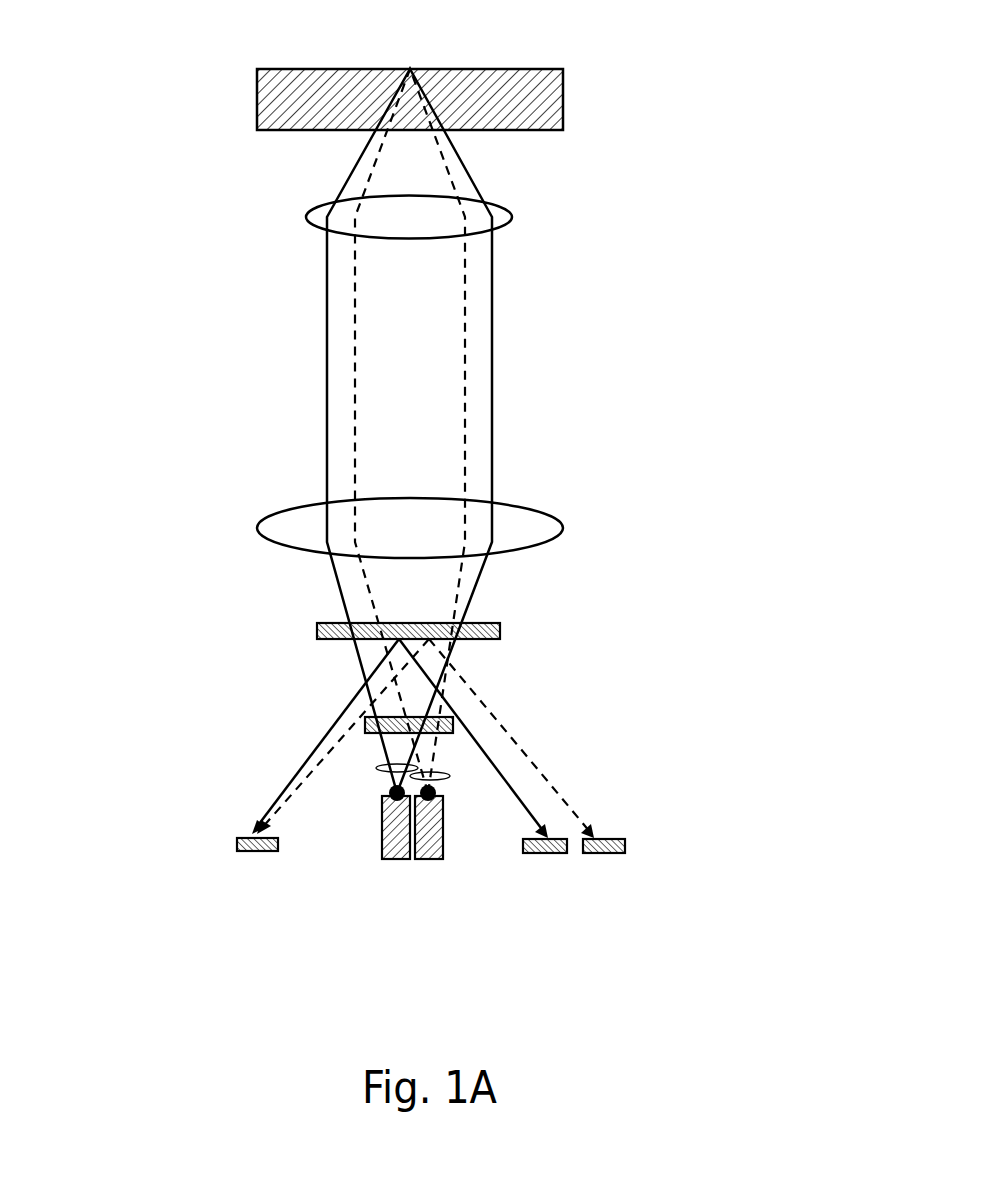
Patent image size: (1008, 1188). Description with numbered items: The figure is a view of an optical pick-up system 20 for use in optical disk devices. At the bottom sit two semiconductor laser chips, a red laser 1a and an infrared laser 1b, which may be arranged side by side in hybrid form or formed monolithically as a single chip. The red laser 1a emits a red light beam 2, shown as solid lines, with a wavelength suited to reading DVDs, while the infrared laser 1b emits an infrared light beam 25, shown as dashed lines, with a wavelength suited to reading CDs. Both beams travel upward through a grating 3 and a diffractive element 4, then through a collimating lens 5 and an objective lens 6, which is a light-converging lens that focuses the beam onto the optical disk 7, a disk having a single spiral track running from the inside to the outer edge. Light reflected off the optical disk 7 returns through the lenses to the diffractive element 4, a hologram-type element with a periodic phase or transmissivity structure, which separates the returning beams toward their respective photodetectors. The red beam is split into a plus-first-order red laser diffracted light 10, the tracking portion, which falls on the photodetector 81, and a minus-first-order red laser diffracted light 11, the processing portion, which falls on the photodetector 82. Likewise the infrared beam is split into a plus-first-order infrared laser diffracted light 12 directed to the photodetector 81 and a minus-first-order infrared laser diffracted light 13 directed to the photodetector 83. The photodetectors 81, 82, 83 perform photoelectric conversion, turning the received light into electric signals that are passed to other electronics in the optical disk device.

The optical pick-up system 20 is at (224, 62).
The optical disk 7 is at (582, 31).
The objective lens 6 is at (512, 224).
The collimating lens 5 is at (520, 510).
The diffractive element 4 is at (500, 626).
The grating 3 is at (362, 714).
The red light beam 2 is at (378, 770).
The infrared light beam 25 is at (447, 777).
The +1st-order red laser diffracted light 10 is at (290, 783).
The +1st-order infrared laser diffracted light 12 is at (333, 747).
The −1st-order red laser diffracted light 11 is at (467, 730).
The −1st-order infrared laser diffracted light 13 is at (565, 798).
The photodetector 81 is at (253, 852).
The photodetector 82 is at (553, 855).
The photodetector 83 is at (625, 843).
The red laser 1a is at (393, 860).
The infrared laser 1b is at (437, 860).